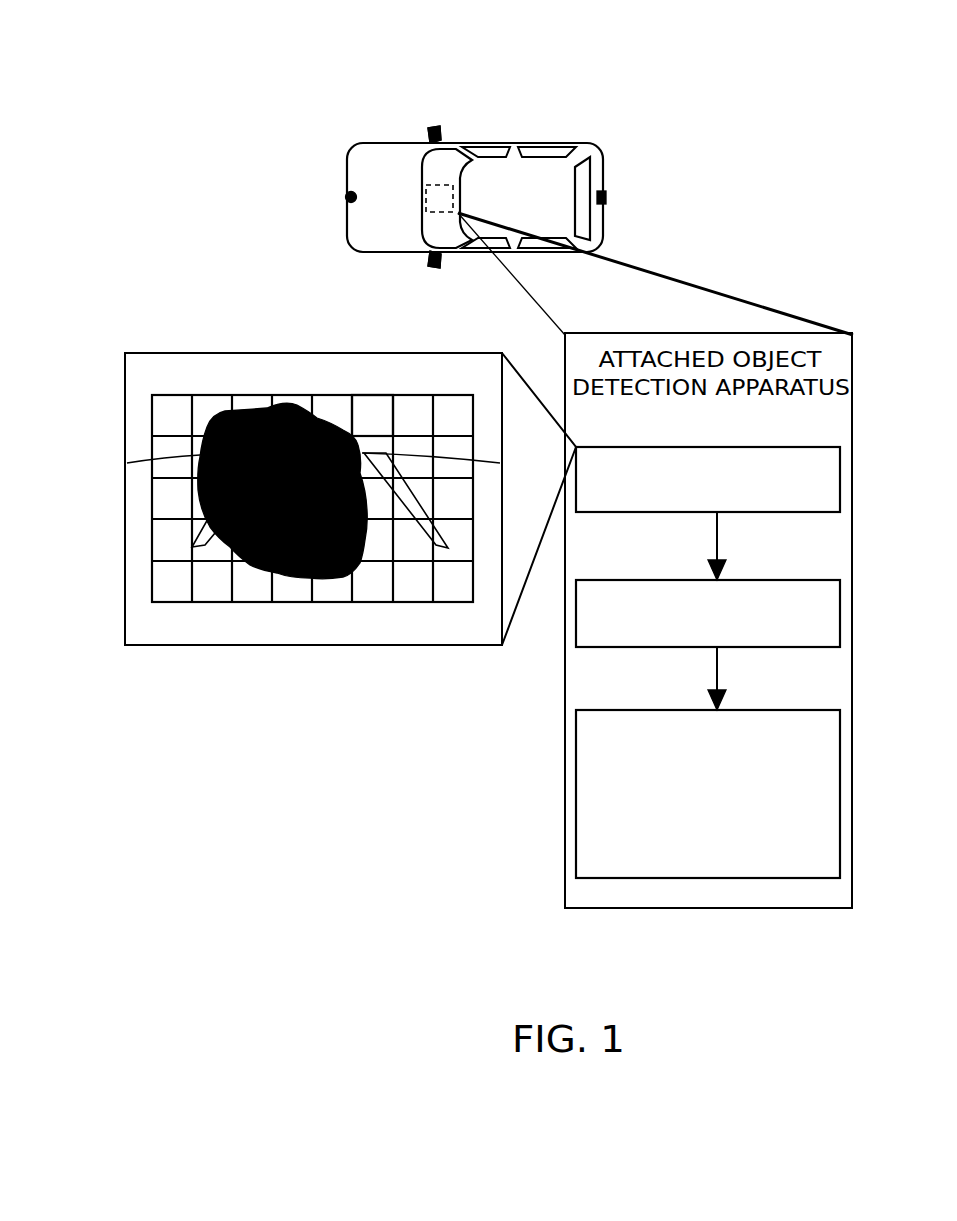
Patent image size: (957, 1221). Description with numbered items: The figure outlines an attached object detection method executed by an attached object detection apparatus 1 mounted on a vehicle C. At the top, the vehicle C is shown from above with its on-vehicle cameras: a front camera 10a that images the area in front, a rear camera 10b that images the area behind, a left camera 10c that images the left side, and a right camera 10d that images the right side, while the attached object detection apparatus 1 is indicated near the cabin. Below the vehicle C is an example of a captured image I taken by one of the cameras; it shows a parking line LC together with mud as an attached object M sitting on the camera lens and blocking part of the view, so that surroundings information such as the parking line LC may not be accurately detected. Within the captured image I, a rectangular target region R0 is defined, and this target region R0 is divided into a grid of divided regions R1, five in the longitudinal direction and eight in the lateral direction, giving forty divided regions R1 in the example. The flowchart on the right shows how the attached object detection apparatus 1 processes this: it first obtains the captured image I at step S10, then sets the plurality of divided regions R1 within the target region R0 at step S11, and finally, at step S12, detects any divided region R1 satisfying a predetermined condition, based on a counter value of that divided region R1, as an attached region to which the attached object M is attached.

The attached object detection apparatus 1 is at (437, 185).
The front camera 10a is at (345, 197).
The rear camera 10b is at (606, 197).
The left camera 10c is at (430, 262).
The right camera 10d is at (434, 128).
The vehicle C is at (572, 103).
The captured image I is at (380, 646).
The target region R0 is at (292, 394).
The divided region R1 is at (378, 407).
The parking line LC is at (200, 542).
The attached object M is at (331, 583).
The step of obtaining captured image S10 is at (756, 446).
The step of setting divided regions S11 is at (765, 579).
The step of detecting attached region S12 is at (765, 709).